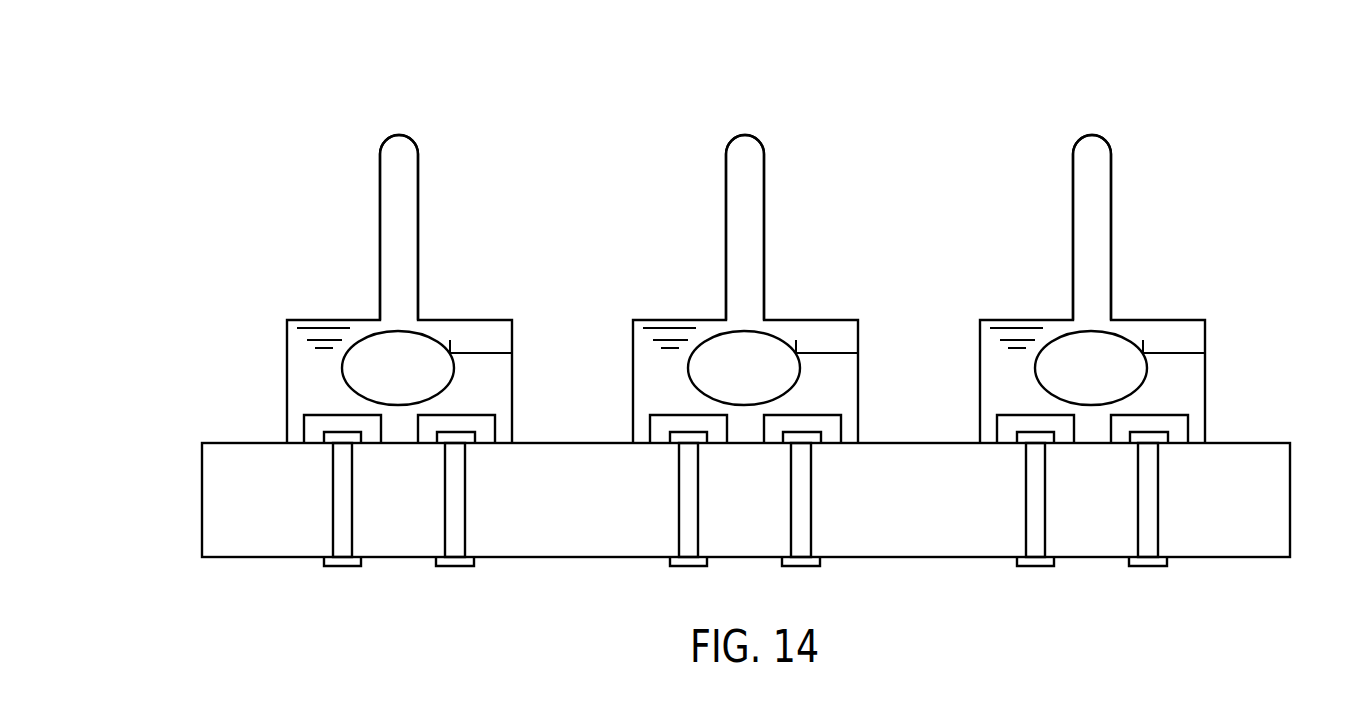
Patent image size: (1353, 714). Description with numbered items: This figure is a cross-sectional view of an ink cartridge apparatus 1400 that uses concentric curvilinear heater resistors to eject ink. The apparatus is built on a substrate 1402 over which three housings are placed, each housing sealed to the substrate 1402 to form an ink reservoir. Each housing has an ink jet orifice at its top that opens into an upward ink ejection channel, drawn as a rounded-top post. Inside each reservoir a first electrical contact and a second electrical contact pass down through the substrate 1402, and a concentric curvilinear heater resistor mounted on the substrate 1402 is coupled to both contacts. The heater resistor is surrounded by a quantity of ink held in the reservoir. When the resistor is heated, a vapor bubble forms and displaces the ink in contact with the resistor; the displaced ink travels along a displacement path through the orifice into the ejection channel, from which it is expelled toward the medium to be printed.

The ink cartridge apparatus 1400 is at (231, 158).
The substrate 1402 is at (1252, 557).